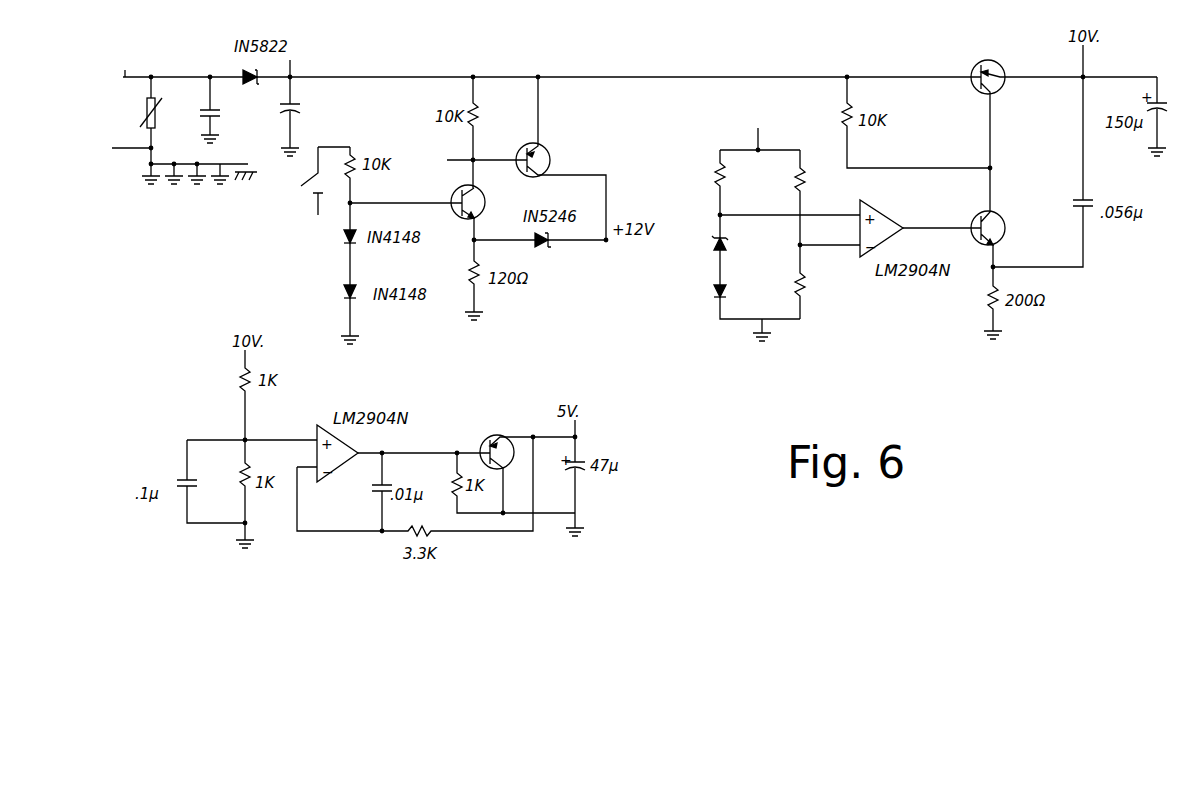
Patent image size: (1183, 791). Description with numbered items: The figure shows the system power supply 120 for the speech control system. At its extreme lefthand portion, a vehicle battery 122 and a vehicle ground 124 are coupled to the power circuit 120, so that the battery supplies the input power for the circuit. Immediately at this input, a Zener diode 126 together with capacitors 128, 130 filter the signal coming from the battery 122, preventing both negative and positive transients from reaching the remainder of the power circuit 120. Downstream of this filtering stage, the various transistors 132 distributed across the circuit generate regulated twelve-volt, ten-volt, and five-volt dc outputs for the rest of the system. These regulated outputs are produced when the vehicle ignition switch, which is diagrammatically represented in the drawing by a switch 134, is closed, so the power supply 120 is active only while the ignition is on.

The system power supply 120 is at (699, 351).
The vehicle battery 122 is at (125, 70).
The vehicle ground 124 is at (125, 152).
The Zener diode 126 is at (157, 117).
The capacitor 128 is at (205, 114).
The capacitor 130 is at (296, 97).
The transistors 132 is at (486, 198).
The switch 134 is at (306, 184).